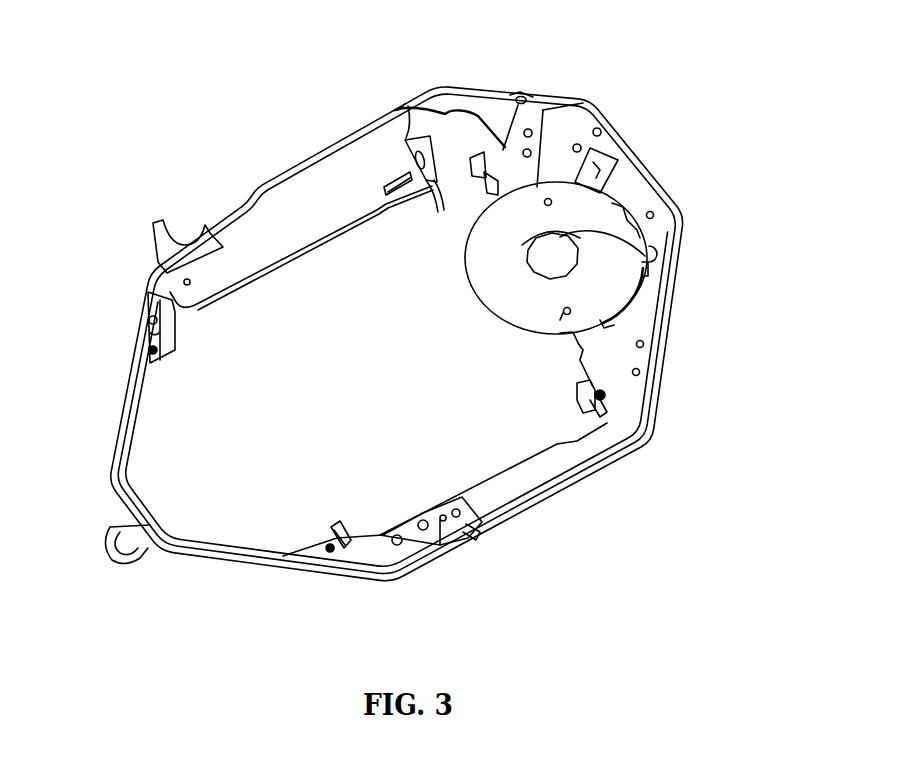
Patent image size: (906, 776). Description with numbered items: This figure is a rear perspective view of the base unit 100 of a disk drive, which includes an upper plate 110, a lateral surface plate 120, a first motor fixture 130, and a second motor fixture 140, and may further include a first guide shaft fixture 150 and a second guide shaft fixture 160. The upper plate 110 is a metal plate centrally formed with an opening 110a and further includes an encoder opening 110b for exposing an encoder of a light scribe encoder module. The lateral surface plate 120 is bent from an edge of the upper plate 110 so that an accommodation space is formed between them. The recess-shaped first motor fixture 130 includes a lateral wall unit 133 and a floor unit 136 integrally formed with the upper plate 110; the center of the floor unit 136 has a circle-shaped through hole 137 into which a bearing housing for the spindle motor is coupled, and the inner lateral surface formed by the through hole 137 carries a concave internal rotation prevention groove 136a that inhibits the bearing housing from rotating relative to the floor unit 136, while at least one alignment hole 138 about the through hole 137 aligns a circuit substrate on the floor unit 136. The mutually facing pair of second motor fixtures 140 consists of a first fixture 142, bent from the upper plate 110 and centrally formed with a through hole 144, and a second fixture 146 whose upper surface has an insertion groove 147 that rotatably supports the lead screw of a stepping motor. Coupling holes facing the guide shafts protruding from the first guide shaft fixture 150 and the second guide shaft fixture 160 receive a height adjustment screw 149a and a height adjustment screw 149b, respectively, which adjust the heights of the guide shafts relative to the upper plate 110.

The base unit 100 is at (330, 121).
The upper plate 110 is at (270, 240).
The opening 110a is at (389, 376).
The encoder opening 110b is at (613, 127).
The lateral surface plate 120 is at (288, 175).
The first motor fixture 130 is at (613, 225).
The lateral wall unit 133 is at (643, 348).
The floor unit 136 is at (604, 293).
The internal rotation prevention groove 136a is at (647, 257).
The through hole 137 is at (562, 268).
The alignment hole 138 is at (566, 314).
The second motor fixture 140 is at (432, 138).
The first fixture 142 is at (442, 213).
The through hole 144 is at (398, 110).
The second fixture 146 is at (178, 322).
The insertion groove 147 is at (178, 313).
The height adjustment screw 149a is at (148, 352).
The height adjustment screw 149b is at (329, 552).
The first guide shaft fixture 150 is at (494, 150).
The second guide shaft fixture 160 is at (576, 410).